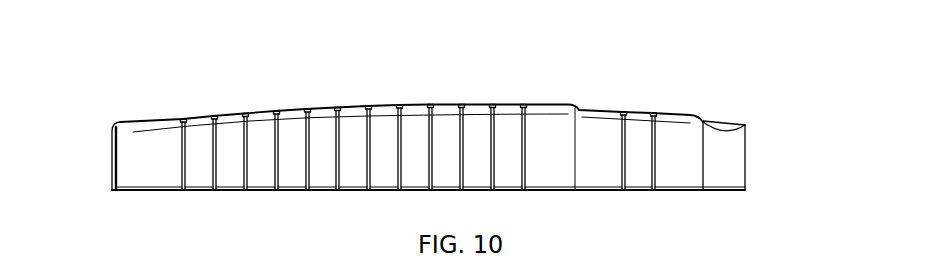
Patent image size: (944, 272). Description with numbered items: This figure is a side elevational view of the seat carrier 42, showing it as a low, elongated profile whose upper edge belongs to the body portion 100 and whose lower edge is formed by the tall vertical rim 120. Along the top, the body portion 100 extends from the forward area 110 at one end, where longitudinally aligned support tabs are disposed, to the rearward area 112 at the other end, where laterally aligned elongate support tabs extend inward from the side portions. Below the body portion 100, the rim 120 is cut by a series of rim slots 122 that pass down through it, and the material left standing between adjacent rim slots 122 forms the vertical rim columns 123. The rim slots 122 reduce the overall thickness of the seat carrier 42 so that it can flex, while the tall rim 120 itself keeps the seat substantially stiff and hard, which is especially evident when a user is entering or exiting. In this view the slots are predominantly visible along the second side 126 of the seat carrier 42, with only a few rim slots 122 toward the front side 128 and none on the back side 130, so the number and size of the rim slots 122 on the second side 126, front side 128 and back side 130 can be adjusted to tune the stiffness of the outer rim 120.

The seat carrier 42 is at (676, 86).
The body portion 100 is at (262, 118).
The forward area 110 is at (158, 117).
The rearward area 112 is at (729, 118).
The rim 120 is at (688, 171).
The rim slots 122 is at (491, 190).
The vertical rim columns 123 is at (353, 172).
The second side 126 is at (552, 147).
The front side 128 is at (107, 162).
The back side 130 is at (748, 153).